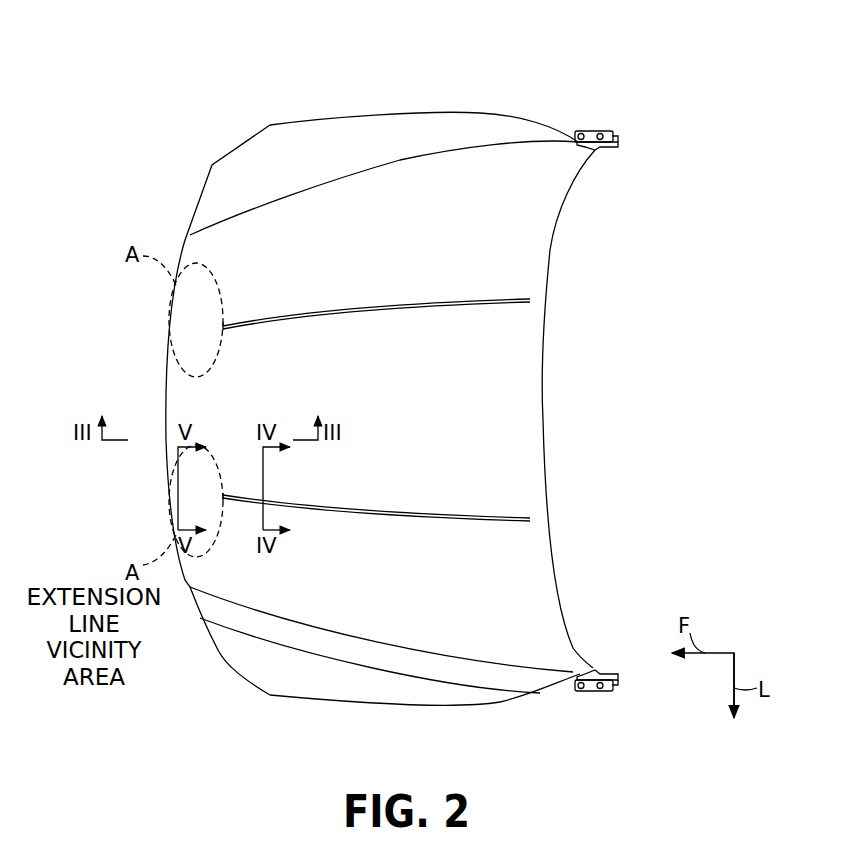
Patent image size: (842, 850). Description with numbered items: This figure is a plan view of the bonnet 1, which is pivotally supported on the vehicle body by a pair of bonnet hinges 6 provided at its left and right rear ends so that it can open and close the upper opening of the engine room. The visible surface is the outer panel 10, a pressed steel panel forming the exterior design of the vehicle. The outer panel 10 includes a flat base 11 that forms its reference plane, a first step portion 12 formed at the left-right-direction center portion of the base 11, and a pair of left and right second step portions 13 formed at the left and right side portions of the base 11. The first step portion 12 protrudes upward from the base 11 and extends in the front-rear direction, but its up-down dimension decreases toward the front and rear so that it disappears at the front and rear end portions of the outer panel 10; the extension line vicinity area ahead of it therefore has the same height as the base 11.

The bonnet 1 is at (222, 80).
The bonnet outer panel 10 is at (208, 182).
The base 11 is at (483, 232).
The first step portion 12 is at (483, 410).
The second step portion 13 is at (395, 133).
The bonnet hinge 6 is at (593, 131).